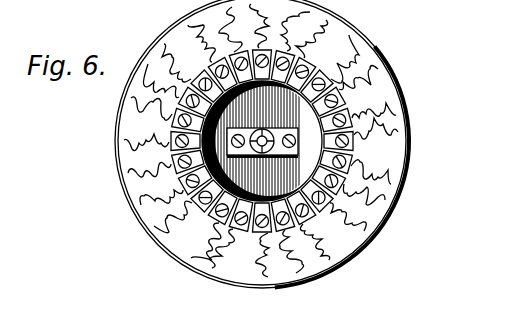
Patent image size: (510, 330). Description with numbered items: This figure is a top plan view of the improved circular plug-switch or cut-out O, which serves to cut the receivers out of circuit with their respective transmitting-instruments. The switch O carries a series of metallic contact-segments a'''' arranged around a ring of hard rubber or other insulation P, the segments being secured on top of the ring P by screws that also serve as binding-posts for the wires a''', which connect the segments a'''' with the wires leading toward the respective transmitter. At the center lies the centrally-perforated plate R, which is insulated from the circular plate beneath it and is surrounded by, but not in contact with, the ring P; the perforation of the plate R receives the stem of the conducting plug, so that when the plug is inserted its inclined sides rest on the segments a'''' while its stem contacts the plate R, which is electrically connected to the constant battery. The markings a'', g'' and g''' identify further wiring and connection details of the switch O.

The circular plug-switch o is at (411, 163).
The ring of hard rubber or other insulation P is at (160, 96).
The centrally-perforated plate R is at (292, 160).
The armature coil section a'' is at (247, 33).
The wires a''' is at (334, 55).
The metallic contact-segments a'''' is at (370, 143).
The coil connecting wire g'' is at (148, 124).
The coil connecting wire g''' is at (176, 71).